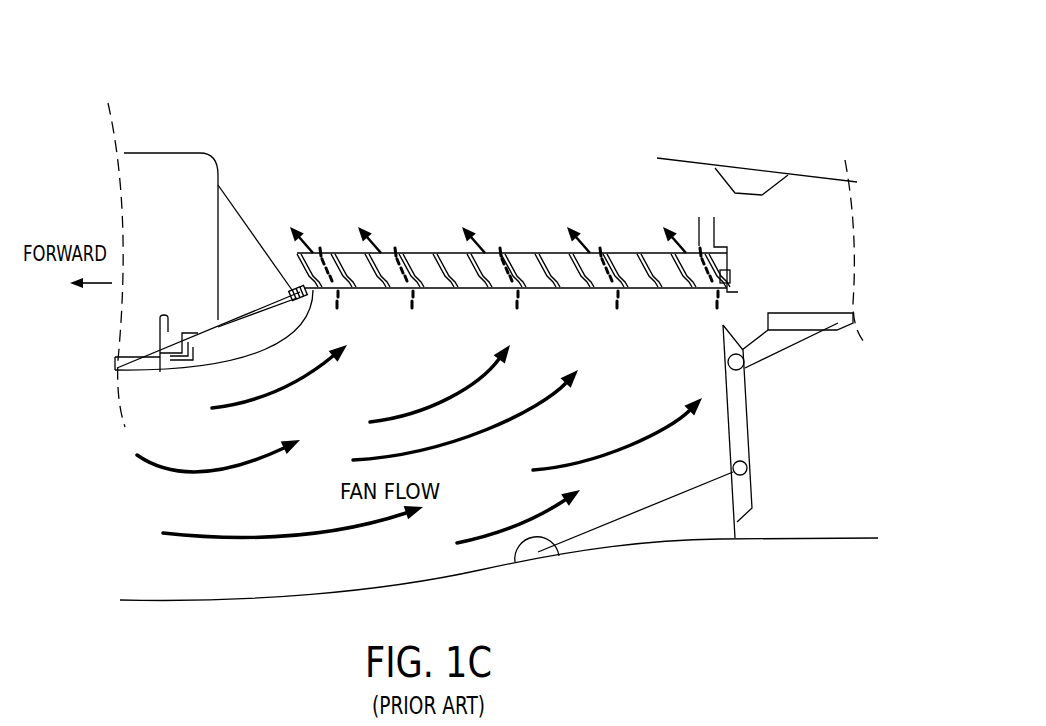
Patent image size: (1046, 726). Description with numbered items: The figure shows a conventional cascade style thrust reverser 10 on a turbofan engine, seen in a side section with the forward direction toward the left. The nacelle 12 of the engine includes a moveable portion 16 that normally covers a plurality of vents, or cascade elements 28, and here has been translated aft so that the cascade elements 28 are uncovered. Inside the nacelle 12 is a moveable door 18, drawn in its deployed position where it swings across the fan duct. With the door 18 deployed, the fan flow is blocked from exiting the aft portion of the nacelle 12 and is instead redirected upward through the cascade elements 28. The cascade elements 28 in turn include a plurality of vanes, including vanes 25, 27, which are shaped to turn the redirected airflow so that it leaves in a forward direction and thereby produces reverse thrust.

The cascade style thrust reverser 10 is at (615, 85).
The nacelle 12 is at (182, 276).
The moveable portion 16 is at (732, 165).
The moveable door 18 is at (748, 410).
The vane 25 is at (515, 253).
The vane 27 is at (712, 280).
The cascade elements 28 is at (417, 253).